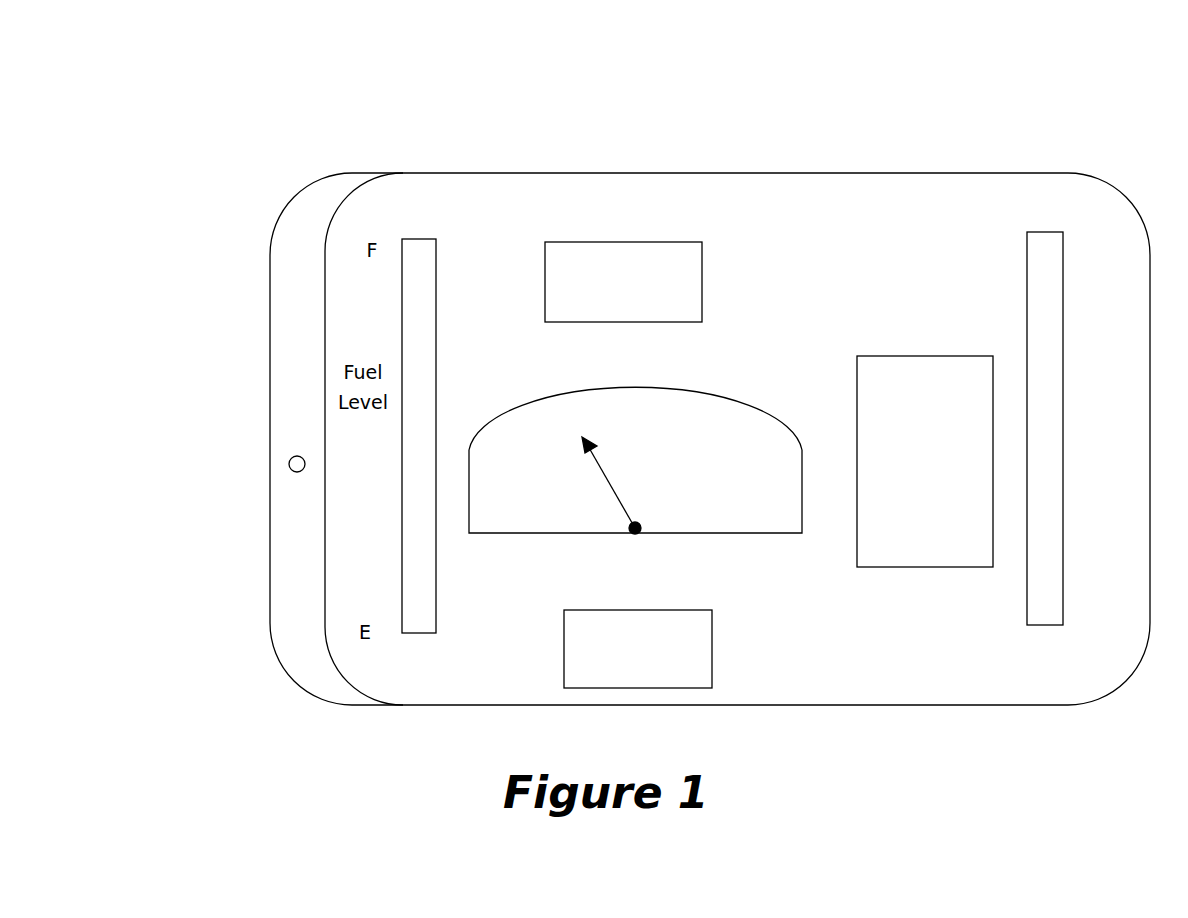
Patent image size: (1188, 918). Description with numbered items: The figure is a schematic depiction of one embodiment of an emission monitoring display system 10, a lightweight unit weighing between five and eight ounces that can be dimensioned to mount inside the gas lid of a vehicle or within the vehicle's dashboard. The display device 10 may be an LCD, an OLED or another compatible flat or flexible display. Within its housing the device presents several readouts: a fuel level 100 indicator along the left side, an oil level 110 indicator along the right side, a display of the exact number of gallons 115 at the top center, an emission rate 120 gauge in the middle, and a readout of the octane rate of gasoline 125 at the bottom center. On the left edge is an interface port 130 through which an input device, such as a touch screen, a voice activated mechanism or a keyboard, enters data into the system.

The emission monitoring display system 10 is at (357, 705).
The exact fuel level 100 is at (788, 143).
The exact oil level 110 is at (1043, 627).
The exact number of gallons 115 is at (572, 242).
The exact emission rate 120 is at (762, 410).
The octane rate of gasoline 125 is at (676, 688).
The interface port 130 is at (291, 470).